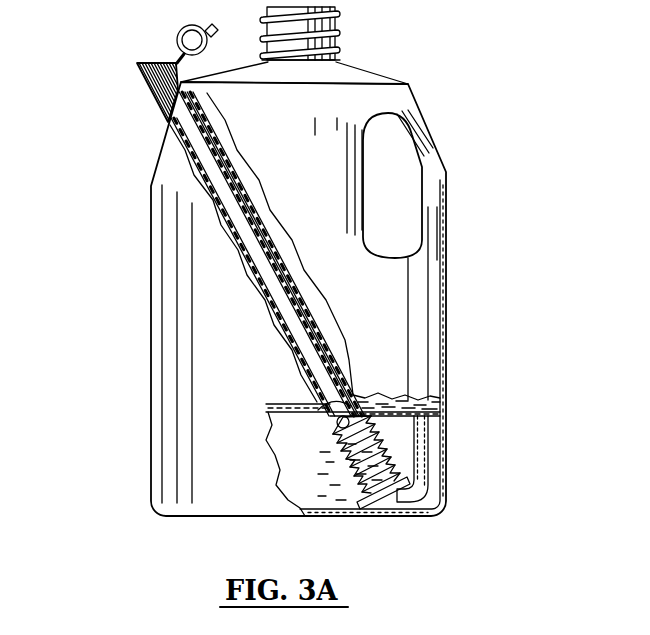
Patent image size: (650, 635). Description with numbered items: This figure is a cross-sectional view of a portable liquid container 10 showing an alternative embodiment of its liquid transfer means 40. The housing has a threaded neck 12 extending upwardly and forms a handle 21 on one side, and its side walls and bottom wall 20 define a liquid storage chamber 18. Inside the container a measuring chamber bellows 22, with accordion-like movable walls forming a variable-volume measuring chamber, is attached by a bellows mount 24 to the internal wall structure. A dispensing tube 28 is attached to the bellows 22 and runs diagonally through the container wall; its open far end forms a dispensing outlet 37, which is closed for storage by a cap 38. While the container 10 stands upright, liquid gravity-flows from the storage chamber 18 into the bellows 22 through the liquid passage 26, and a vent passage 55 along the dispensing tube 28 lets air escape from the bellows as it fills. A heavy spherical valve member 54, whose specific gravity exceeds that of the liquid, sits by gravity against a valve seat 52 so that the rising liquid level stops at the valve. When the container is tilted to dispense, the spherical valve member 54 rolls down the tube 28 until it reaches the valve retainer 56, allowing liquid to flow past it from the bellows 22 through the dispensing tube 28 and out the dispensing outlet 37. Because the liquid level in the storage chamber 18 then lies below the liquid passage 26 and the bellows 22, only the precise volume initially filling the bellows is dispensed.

The portable liquid container 10 is at (476, 106).
The threaded neck 12 is at (336, 30).
The handle 21 is at (422, 230).
The liquid storage chamber 18 is at (418, 410).
The liquid passage 26 is at (427, 458).
The bellows mount 24 is at (383, 497).
The liquid transfer means 40 is at (354, 418).
The valve retainer 56 is at (222, 168).
The vent passage 55 is at (285, 280).
The dispensing tube 28 is at (277, 323).
The spherical valve member 54 is at (267, 411).
The bottom wall 20 is at (300, 410).
The valve seat 52 is at (337, 437).
The measuring chamber bellows 22 is at (340, 473).
The dispensing outlet 37 is at (148, 63).
The cap 38 is at (178, 33).